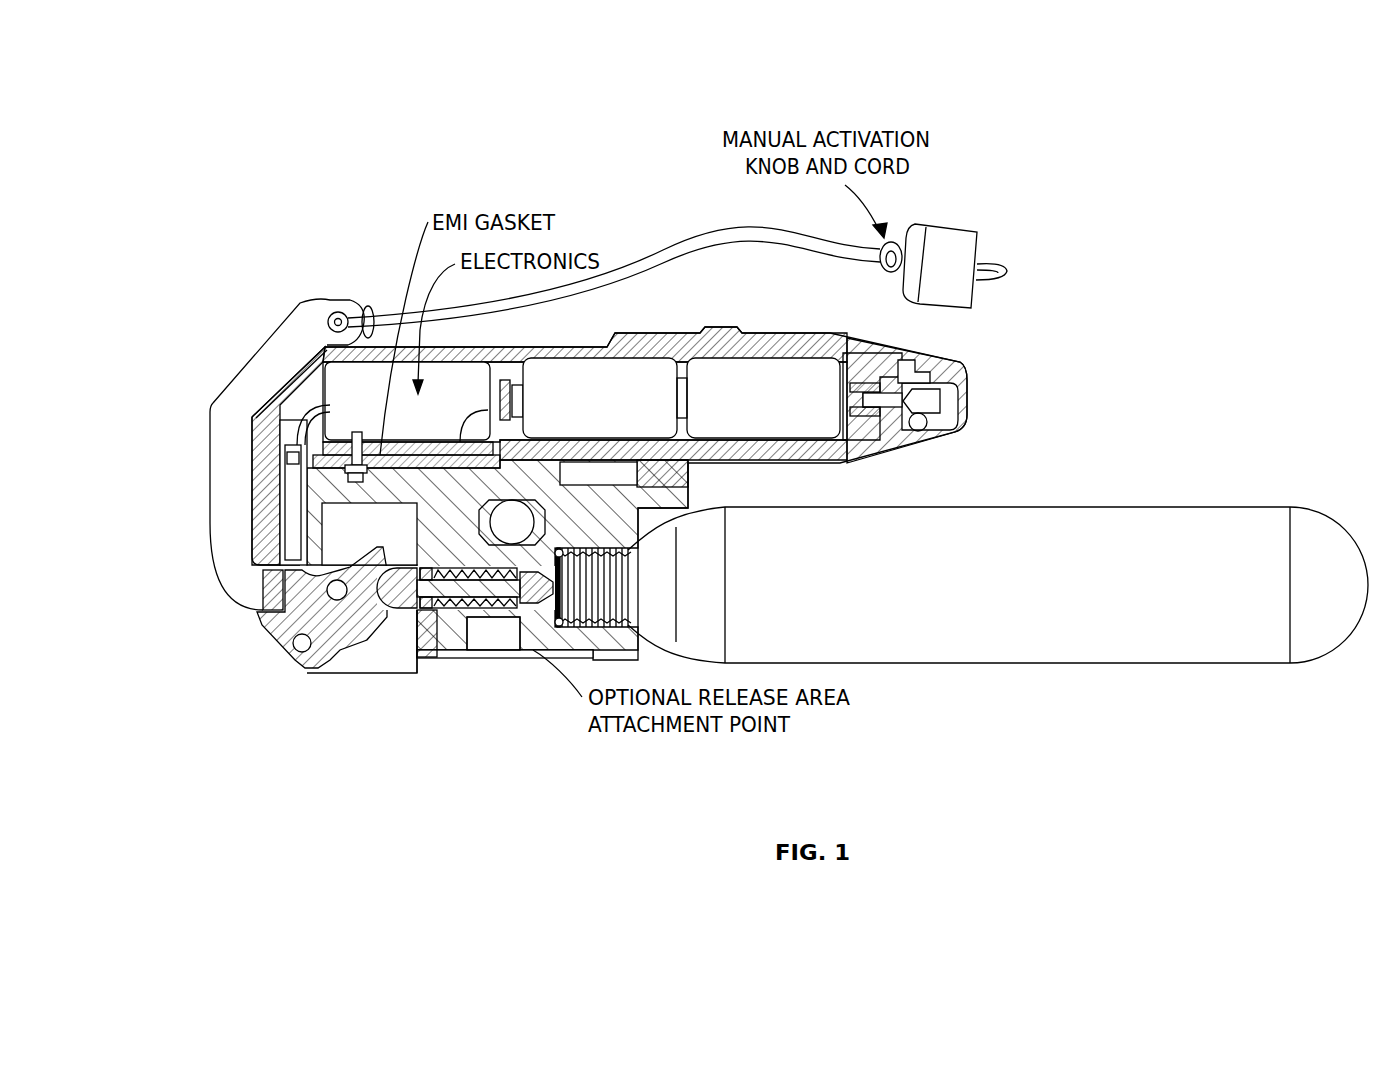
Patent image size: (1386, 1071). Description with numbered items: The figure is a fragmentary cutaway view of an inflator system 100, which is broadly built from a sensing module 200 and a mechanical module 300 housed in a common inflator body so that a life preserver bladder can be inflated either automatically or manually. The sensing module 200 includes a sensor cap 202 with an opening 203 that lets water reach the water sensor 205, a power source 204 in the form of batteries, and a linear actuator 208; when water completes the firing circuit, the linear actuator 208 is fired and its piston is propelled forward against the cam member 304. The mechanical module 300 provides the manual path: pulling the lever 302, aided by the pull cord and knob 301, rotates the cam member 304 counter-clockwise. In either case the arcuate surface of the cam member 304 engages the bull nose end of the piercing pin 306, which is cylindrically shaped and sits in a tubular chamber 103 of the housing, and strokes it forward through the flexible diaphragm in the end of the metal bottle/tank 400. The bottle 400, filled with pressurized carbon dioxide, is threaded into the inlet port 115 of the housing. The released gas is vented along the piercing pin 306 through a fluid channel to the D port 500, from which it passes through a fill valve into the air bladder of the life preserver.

The inflator system 100 is at (243, 104).
The mechanical module 300 is at (197, 475).
The lever 302 is at (262, 308).
The pull cord and knob 301 is at (957, 236).
The power source 204 is at (620, 372).
The sensing module 200 is at (1067, 383).
The sensor cap 202 is at (900, 455).
The water sensor 205 is at (922, 383).
The opening 203 is at (957, 395).
The inlet port 115 is at (583, 535).
The linear actuator 208 is at (219, 525).
The cam member 304 is at (283, 634).
The piercing pin 306 is at (408, 612).
The tubular chamber 103 is at (445, 617).
The D port 500 is at (526, 628).
The metal bottle/tank 400 is at (1078, 665).